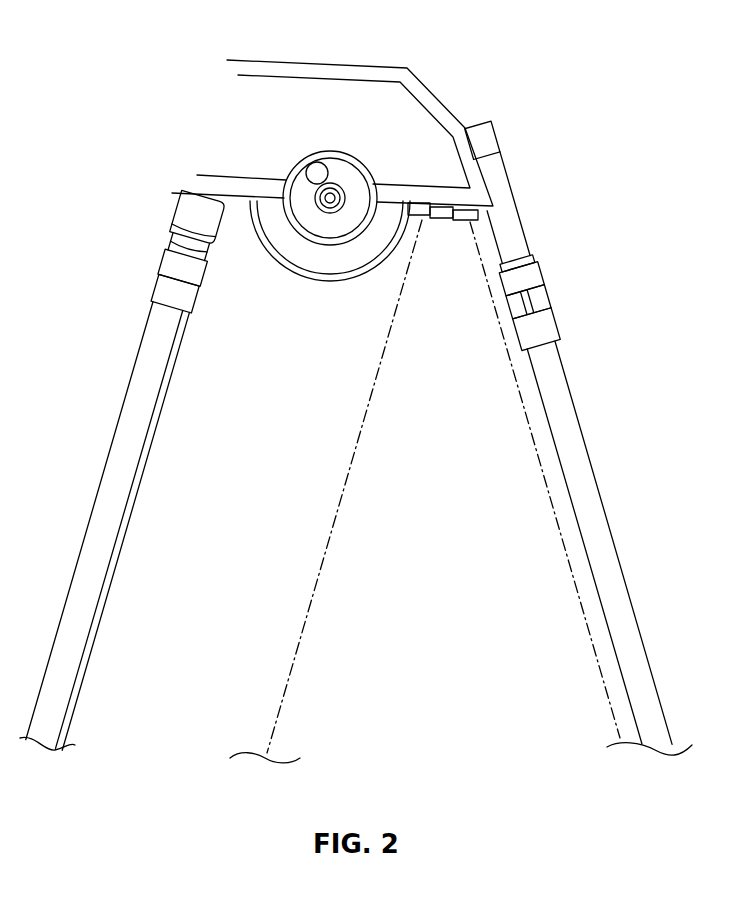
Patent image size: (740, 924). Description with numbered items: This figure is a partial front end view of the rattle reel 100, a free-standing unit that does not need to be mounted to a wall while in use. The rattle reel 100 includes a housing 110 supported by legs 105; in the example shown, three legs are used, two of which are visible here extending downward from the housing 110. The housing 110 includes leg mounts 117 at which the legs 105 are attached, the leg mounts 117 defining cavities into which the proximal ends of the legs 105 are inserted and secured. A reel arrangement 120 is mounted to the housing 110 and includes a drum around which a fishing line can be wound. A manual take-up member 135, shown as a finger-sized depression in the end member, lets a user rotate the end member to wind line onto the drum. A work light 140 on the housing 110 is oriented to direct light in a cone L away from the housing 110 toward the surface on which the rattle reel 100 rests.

The rattle reel 100 is at (135, 287).
The legs 105 is at (122, 413).
The housing 110 is at (378, 65).
The leg mounts 117 is at (491, 122).
The reel arrangement 120 is at (299, 284).
The manual take-up member 135 is at (317, 162).
The work light 140 is at (457, 222).
The cone L is at (338, 507).